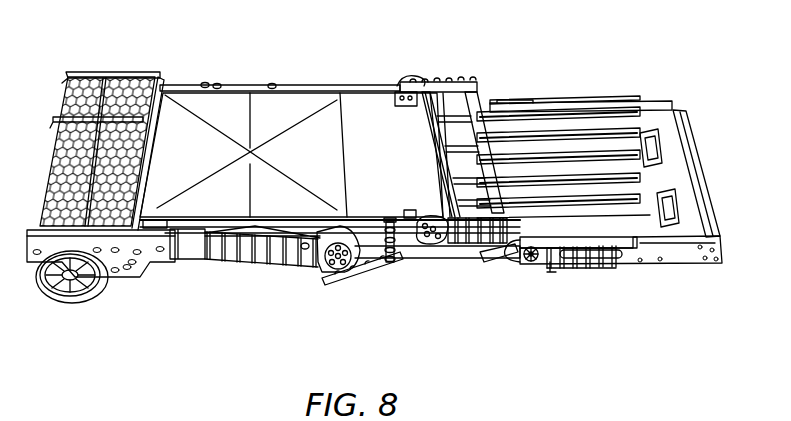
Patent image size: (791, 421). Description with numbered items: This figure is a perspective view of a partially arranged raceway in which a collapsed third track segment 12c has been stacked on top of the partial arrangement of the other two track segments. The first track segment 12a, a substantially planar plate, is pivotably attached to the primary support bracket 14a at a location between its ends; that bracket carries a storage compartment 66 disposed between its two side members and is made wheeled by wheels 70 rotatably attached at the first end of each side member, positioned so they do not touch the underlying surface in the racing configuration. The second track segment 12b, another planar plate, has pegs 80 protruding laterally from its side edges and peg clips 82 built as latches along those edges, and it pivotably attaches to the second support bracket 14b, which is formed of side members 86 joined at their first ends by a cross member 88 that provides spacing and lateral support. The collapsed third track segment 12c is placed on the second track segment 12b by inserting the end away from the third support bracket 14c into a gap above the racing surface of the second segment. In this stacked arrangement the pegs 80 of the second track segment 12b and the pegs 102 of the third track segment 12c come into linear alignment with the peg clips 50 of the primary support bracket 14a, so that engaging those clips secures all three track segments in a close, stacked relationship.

The storage compartment 66 is at (90, 84).
The wheel 70 is at (80, 298).
The third track segment 12c is at (305, 100).
The third support bracket 14c is at (455, 78).
The second track segment 12b is at (550, 123).
The side members 86 is at (630, 104).
The cross member 88 is at (683, 162).
The second support bracket 14b is at (630, 264).
The primary support bracket 14a is at (180, 254).
The peg clips 50 is at (335, 283).
The pegs 80 is at (381, 284).
The pegs 102 is at (396, 258).
The first track segment 12a is at (442, 259).
The peg clips 82 is at (497, 268).